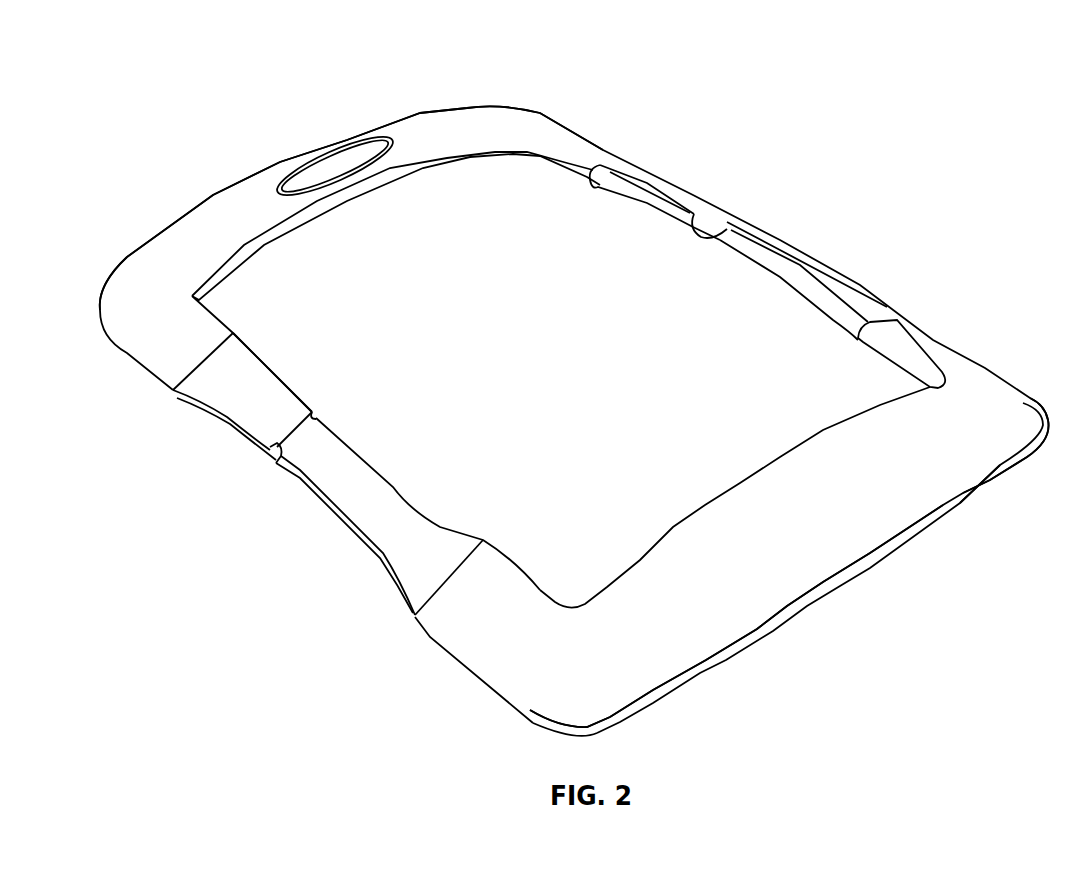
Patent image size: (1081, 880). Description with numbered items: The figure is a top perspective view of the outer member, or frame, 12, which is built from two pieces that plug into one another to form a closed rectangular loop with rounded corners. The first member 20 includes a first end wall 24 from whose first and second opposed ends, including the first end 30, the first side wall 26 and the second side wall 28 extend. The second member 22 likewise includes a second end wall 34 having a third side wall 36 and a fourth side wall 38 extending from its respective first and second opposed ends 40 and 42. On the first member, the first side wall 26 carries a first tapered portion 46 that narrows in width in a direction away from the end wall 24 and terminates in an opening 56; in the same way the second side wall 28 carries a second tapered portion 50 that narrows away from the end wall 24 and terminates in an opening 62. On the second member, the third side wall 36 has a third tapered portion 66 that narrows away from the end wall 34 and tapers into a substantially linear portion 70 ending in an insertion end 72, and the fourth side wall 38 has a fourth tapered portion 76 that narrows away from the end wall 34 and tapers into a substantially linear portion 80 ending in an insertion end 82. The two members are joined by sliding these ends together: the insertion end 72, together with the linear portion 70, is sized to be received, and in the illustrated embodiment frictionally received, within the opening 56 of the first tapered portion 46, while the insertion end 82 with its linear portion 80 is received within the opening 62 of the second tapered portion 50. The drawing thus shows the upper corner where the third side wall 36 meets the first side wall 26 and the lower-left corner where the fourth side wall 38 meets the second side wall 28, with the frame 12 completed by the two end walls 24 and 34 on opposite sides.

The protective case 12 is at (228, 77).
The first member 20 is at (207, 192).
The second member 22 is at (923, 531).
The first end wall 24 is at (170, 227).
The first side wall 26 is at (648, 152).
The second side wall 28 is at (172, 398).
The first end 30 is at (466, 107).
The second end wall 34 is at (860, 563).
The third side wall 36 is at (901, 306).
The fourth side wall 38 is at (426, 641).
The first end 40 is at (1023, 410).
The second end 42 is at (583, 710).
The first tapered portion 46 is at (636, 214).
The second tapered portion 50 is at (273, 363).
The opening 56 is at (735, 224).
The opening 62 is at (276, 461).
The third tapered portion 66 is at (793, 298).
The substantially linear portion 70 is at (793, 263).
The insertion end 72 is at (701, 240).
The fourth tapered portion 76 is at (397, 481).
The substantially linear portion 80 is at (343, 518).
The insertion end 82 is at (314, 417).